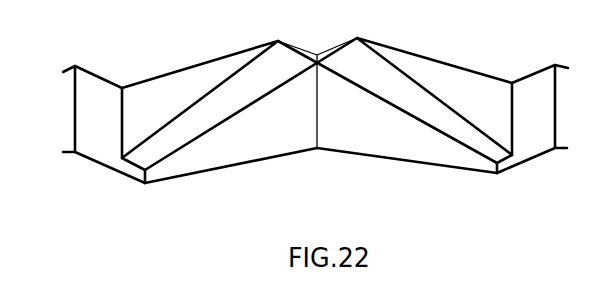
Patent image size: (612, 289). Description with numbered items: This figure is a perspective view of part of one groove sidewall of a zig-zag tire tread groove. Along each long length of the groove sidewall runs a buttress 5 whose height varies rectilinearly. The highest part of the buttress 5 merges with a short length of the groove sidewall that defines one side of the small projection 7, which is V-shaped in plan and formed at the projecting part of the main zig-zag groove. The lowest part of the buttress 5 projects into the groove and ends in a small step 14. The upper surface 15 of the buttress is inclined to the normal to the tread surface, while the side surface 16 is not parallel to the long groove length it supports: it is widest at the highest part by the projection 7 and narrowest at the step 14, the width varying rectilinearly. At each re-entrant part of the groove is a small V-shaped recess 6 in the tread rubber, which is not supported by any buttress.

The buttress 5 is at (270, 97).
The small recess 6 is at (108, 169).
The small projection 7 is at (317, 55).
The small step 14 is at (132, 172).
The upper surface 15 is at (214, 108).
The side surface 16 is at (249, 147).